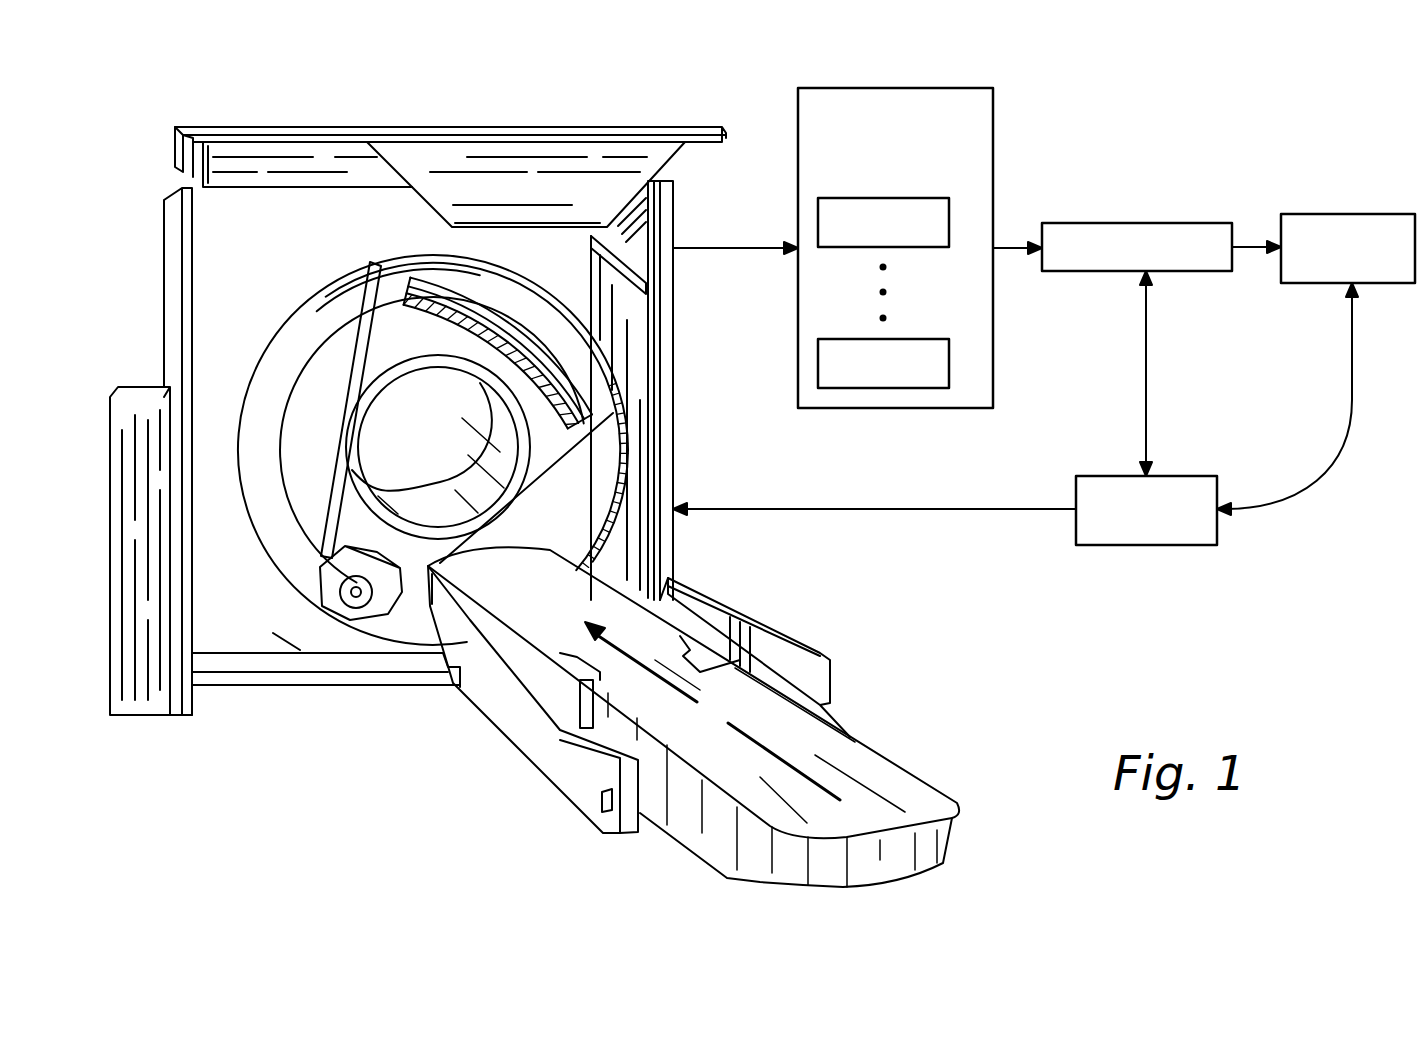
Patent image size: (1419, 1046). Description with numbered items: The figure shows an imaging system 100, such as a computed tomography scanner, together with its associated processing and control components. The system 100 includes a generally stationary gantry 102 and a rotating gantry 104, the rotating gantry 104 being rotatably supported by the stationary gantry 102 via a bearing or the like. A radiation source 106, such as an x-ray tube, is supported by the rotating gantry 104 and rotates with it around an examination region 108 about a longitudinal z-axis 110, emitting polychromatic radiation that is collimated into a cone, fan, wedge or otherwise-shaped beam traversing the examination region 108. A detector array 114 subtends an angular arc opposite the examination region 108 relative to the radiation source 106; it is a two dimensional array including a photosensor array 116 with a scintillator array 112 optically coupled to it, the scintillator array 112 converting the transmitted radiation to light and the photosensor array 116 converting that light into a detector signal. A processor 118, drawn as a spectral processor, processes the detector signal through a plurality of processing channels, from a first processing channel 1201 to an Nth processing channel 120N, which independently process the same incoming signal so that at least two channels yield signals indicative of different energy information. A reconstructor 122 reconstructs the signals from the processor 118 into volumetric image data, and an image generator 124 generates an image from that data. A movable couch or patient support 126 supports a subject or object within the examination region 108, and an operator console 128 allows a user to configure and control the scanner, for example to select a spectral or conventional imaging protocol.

The imaging system 100 is at (255, 95).
The generally stationary gantry 102 is at (186, 300).
The rotating gantry 104 is at (392, 348).
The radiation source 106 is at (352, 604).
The examination region 108 is at (438, 446).
The z-axis 110 is at (644, 660).
The scintillator array 112 is at (397, 293).
The detector array 114 is at (563, 360).
The photosensor array 116 is at (417, 300).
The processor 118 is at (995, 142).
The processing channel 1201 is at (897, 198).
The processing channel 120N is at (897, 339).
The reconstructor 122 is at (1108, 223).
The image generator 124 is at (1318, 214).
The patient support 126 is at (895, 793).
The operator console 128 is at (1155, 546).